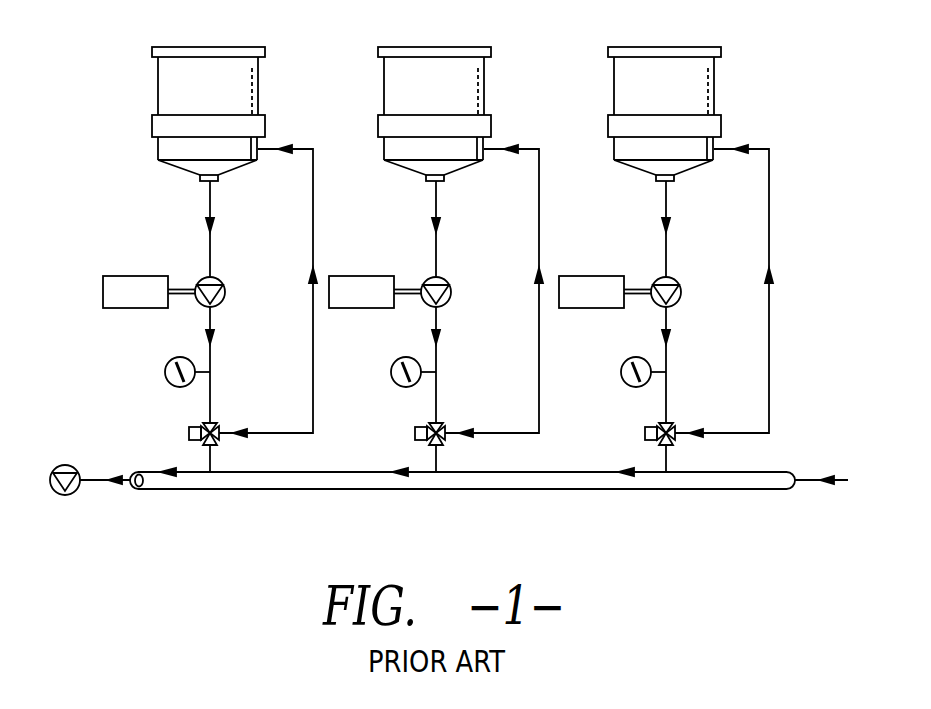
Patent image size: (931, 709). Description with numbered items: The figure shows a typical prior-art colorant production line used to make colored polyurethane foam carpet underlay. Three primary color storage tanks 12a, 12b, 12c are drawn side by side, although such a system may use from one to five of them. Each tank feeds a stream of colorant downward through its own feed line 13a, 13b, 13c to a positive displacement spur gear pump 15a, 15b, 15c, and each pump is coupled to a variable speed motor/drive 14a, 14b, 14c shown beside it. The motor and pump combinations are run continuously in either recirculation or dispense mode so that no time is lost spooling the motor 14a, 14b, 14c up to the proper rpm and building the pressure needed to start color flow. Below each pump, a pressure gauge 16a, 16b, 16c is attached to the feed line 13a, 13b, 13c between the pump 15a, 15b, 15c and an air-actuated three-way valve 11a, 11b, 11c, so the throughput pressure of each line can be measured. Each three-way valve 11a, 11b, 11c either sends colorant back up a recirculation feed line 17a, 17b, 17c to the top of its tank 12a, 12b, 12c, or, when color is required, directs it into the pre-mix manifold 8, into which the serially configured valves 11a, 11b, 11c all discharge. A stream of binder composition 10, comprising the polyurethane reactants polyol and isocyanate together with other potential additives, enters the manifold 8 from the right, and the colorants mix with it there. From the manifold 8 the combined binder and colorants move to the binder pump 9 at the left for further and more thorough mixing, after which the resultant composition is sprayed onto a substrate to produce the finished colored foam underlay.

The pre-mix manifold 8 is at (257, 490).
The binder pump 9 is at (72, 465).
The stream of binder composition 10 is at (838, 480).
The 3-way valve 11a is at (189, 433).
The 3-way valve 11b is at (399, 423).
The 3-way valve 11c is at (629, 423).
The primary color storage tank 12a is at (152, 52).
The primary color storage tank 12b is at (413, 101).
The primary color storage tank 12c is at (643, 101).
The feed line 13a is at (210, 248).
The feed line 13b is at (408, 326).
The feed line 13c is at (638, 326).
The variable speed motor/drive 14a is at (118, 276).
The variable speed motor/drive 14b is at (369, 270).
The variable speed motor/drive 14c is at (599, 270).
The positive displacement spur gear pump 15a is at (221, 281).
The positive displacement spur gear pump 15b is at (467, 274).
The positive displacement spur gear pump 15c is at (696, 274).
The pressure gauge 16a is at (172, 361).
The pressure gauge 16b is at (387, 356).
The pressure gauge 16c is at (617, 356).
The recirculation feed line 17a is at (299, 148).
The recirculation feed line 17b is at (502, 266).
The recirculation feed line 17c is at (731, 266).